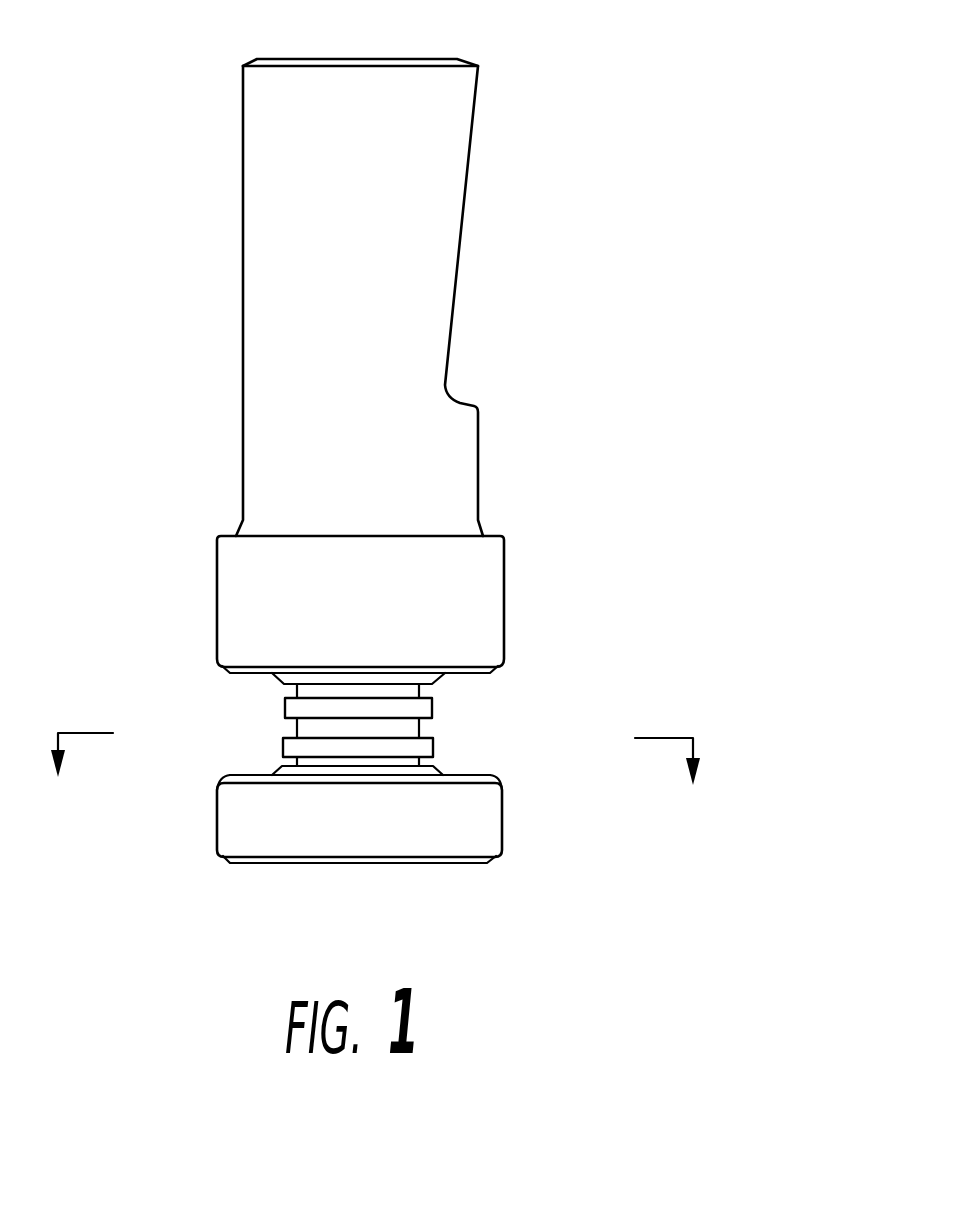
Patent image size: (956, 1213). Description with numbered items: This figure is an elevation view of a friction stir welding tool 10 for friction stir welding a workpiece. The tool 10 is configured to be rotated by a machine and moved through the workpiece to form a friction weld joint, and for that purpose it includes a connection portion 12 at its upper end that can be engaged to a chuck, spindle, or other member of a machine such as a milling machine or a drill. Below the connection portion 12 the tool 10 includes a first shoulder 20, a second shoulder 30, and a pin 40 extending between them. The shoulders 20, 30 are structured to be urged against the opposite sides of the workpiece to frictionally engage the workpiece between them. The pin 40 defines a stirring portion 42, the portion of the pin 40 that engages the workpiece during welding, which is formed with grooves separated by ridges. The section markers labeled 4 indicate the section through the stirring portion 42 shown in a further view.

The friction stir welding tool 10 is at (483, 434).
The connection portion 12 is at (262, 163).
The first shoulder 20 is at (384, 619).
The second shoulder 30 is at (477, 776).
The pin 40 is at (285, 710).
The stirring portion 42 is at (462, 706).
The section line 4- 4 is at (371, 795).